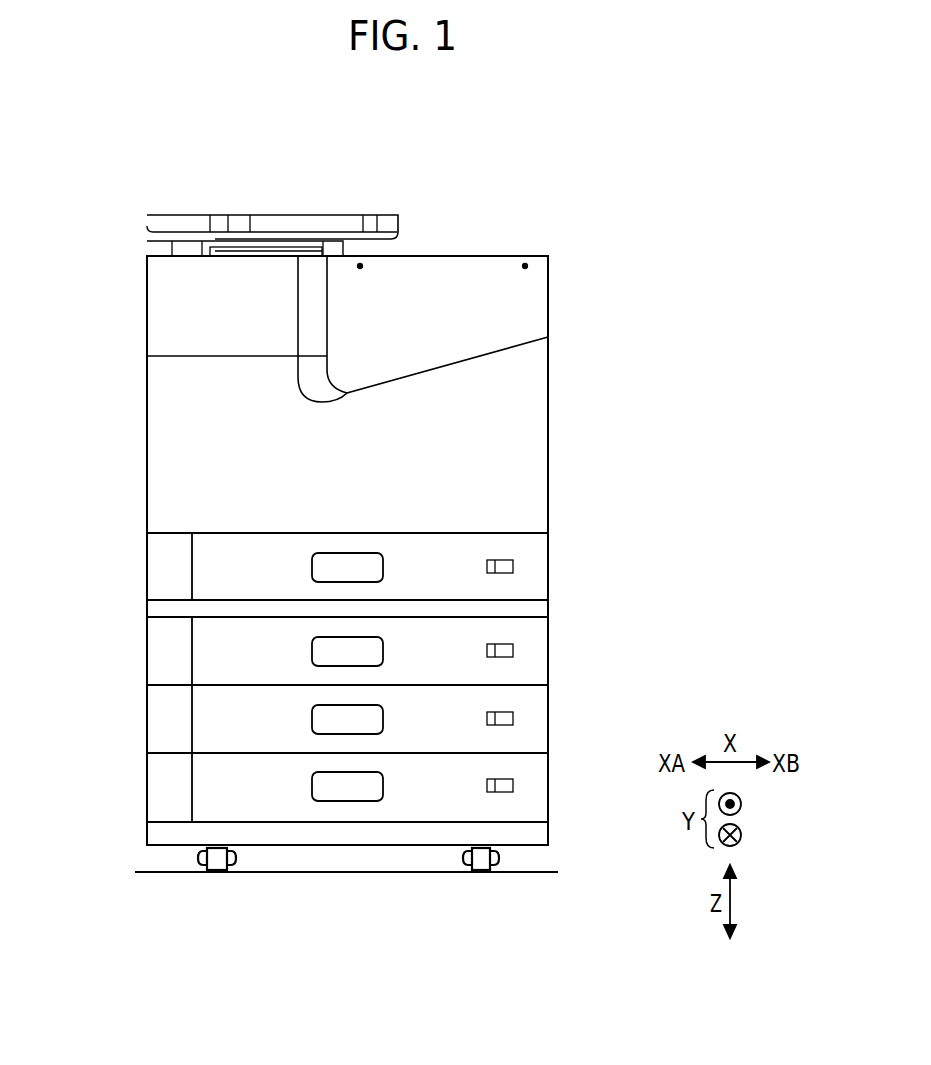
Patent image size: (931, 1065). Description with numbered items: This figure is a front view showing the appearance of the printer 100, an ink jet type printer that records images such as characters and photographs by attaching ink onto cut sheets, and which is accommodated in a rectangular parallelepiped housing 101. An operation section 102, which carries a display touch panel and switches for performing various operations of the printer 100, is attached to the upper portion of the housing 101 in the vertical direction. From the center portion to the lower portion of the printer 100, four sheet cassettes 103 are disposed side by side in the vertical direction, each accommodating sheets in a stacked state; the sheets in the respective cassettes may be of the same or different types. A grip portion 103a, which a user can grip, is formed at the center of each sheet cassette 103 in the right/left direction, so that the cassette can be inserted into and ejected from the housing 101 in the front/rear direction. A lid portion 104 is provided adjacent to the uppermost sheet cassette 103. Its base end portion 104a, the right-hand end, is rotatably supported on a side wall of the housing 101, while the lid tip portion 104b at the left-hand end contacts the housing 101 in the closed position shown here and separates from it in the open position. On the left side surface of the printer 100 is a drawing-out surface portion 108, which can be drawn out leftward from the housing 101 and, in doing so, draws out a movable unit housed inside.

The printer 100 is at (595, 178).
The housing 101 is at (548, 297).
The operation section 102 is at (311, 214).
The sheet cassette 103 is at (532, 566).
The grip portion 103a is at (380, 570).
The lid portion 104 is at (531, 477).
The base end portion 104a is at (531, 399).
The lid tip portion 104b is at (165, 474).
The drawing-out surface portion 108 is at (147, 407).